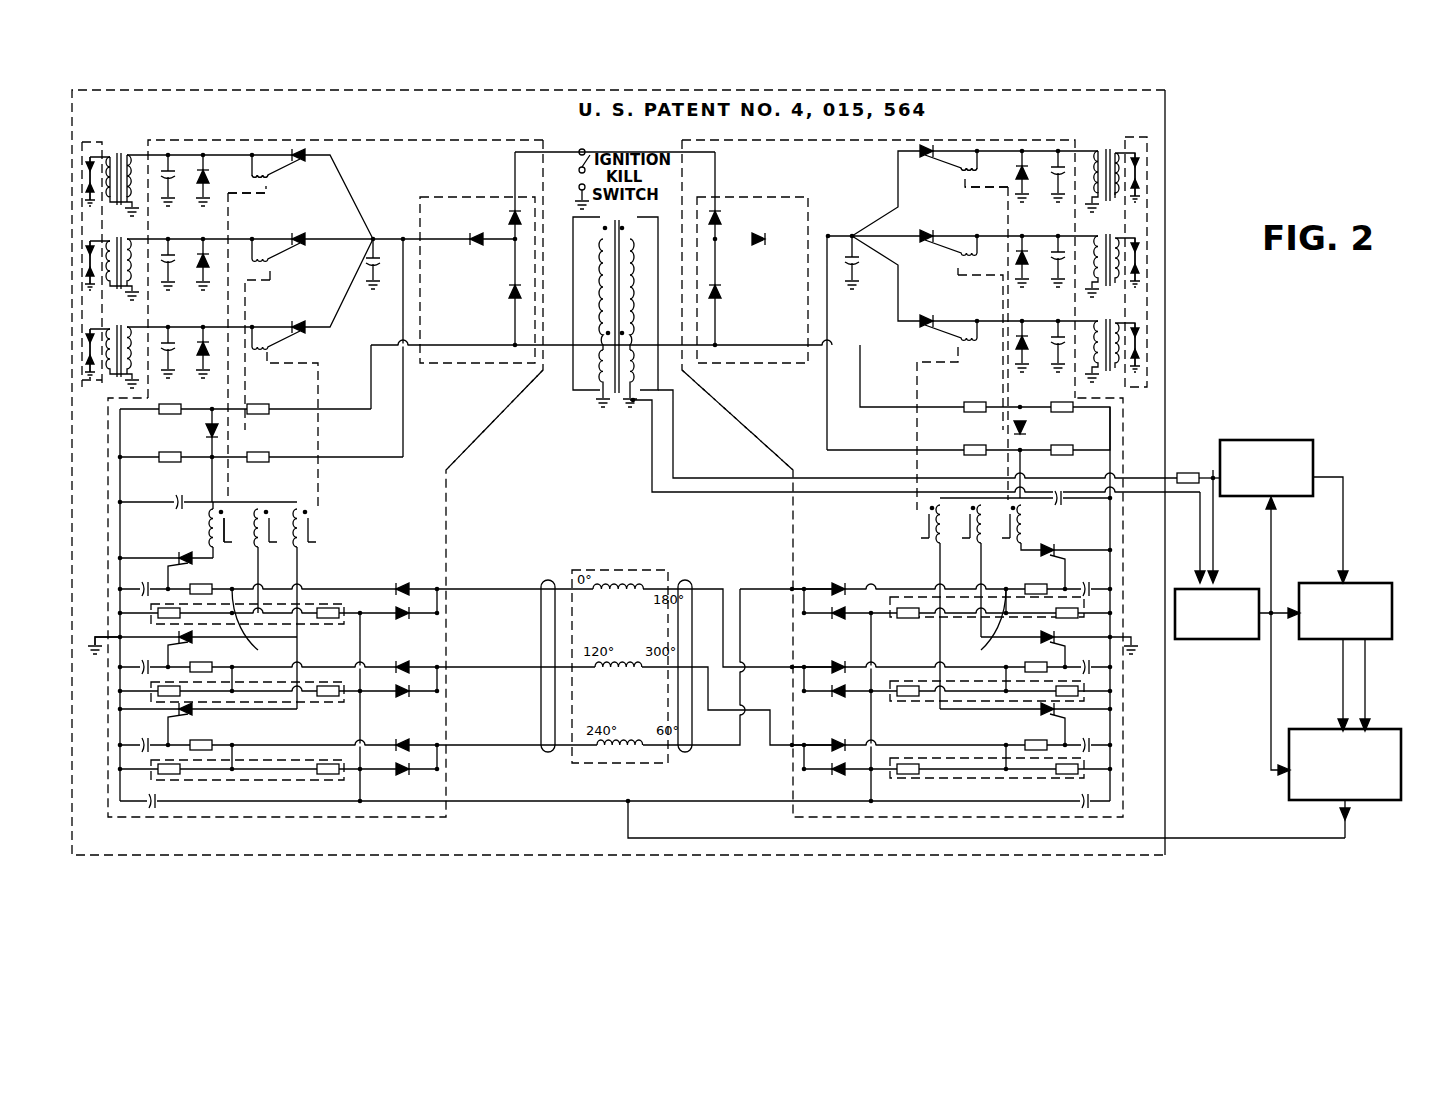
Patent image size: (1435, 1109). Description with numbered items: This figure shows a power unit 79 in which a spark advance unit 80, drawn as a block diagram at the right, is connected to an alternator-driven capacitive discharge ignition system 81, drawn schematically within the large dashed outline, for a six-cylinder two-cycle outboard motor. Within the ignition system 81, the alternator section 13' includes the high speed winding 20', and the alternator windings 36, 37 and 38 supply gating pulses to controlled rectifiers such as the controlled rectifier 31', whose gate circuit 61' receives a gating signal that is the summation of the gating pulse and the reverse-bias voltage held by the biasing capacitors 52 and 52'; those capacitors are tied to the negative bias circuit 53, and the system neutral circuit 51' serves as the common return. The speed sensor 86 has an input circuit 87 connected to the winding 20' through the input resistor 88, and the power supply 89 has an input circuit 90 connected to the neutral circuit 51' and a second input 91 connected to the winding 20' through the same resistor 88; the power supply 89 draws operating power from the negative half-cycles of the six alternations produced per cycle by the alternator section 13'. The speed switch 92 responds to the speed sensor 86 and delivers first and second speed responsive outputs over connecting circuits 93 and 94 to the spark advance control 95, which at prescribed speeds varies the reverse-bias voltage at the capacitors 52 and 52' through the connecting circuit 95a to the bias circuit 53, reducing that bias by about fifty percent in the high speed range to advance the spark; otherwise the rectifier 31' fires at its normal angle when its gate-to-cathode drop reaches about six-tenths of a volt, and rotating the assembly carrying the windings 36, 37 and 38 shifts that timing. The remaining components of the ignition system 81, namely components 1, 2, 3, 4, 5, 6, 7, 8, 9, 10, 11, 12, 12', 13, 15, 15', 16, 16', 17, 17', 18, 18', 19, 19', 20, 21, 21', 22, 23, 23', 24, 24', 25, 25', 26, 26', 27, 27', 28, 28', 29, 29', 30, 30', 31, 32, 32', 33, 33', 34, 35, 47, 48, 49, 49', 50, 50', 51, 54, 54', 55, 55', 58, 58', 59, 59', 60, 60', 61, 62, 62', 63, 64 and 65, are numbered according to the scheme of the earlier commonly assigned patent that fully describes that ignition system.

The pickup magnet 1 is at (86, 178).
The pickup magnet 2 is at (1145, 176).
The pickup magnet 3 is at (86, 266).
The pickup magnet 4 is at (1145, 264).
The pickup magnet 5 is at (86, 351).
The pickup magnet 6 is at (1145, 340).
The flywheel 7 is at (87, 397).
The charging coil assembly 8 is at (88, 142).
The charging coil assembly 9 is at (1143, 138).
The charging circuit 10 is at (398, 204).
The charging circuit 11 is at (845, 204).
The storage capacitor 12 is at (359, 270).
The storage capacitor 12' is at (871, 262).
The ignition transformer 13 is at (586, 331).
The alternator section 13' is at (679, 277).
The trigger circuit 15 is at (271, 343).
The trigger circuit 15' is at (959, 339).
The trigger circuit 16 is at (293, 264).
The trigger circuit 16' is at (945, 267).
The trigger circuit 17 is at (302, 340).
The trigger circuit 17' is at (927, 335).
The control circuit 18 is at (325, 478).
The control circuit 18' is at (902, 478).
The pulse transformers 19 is at (290, 528).
The pulse transformers 19' is at (928, 524).
The secondary winding 20 is at (577, 383).
The high speed winding 20' is at (666, 379).
The primary winding 21 is at (591, 288).
The primary winding 21' is at (646, 288).
The rectifier 22 is at (477, 368).
The capacitor 23 is at (208, 490).
The capacitor 23' is at (1025, 511).
The resistor network 24 is at (261, 453).
The resistor network 24' is at (968, 421).
The SCR 25 is at (285, 172).
The SCR 25' is at (941, 169).
The charging coil 26 is at (122, 151).
The charging coil 26' is at (1100, 149).
The trigger winding circuit 27 is at (247, 211).
The trigger winding circuit 27' is at (985, 206).
The gate winding 28 is at (242, 175).
The gate winding 28' is at (986, 175).
The trigger winding circuit 29 is at (263, 349).
The trigger winding circuit 29' is at (976, 349).
The trigger winding circuit 30 is at (314, 431).
The trigger winding circuit 30' is at (914, 428).
The SCR 31 is at (166, 561).
The controlled rectifier 31' is at (1065, 554).
The SCR 32 is at (201, 646).
The SCR 32' is at (1033, 644).
The SCR 33 is at (203, 717).
The SCR 33' is at (1024, 717).
The pulse transformer winding 34 is at (207, 528).
The pulse transformer core 35 is at (220, 542).
The alternator winding 36 is at (617, 596).
The alternator winding 37 is at (640, 673).
The alternator winding 38 is at (637, 752).
The connector 47 is at (548, 580).
The connector 48 is at (685, 580).
The diode 49 is at (396, 649).
The diode 49' is at (828, 647).
The resistor 50 is at (202, 578).
The resistor 50' is at (1022, 652).
The ground line 51 is at (79, 621).
The system neutral circuit 51' is at (915, 522).
The biasing capacitor 52 is at (178, 795).
The biasing capacitor 52' is at (1054, 795).
The negative bias circuit 53 is at (690, 801).
The diode 54 is at (845, 778).
The resistor 54' is at (259, 759).
The diode 55 is at (840, 666).
The diode 55' is at (421, 740).
The resistor network 58 is at (247, 692).
The resistor network 58' is at (987, 687).
The resistor 59 is at (153, 623).
The resistor 59' is at (1143, 618).
The resistor 60 is at (335, 652).
The resistor 60' is at (981, 691).
The conductor 61 is at (255, 625).
The gate circuit 61' is at (983, 623).
The capacitor 62 is at (147, 580).
The capacitor 62' is at (1092, 654).
The housing boundary 63 is at (452, 465).
The housing boundary 64 is at (771, 438).
The diode 65 is at (403, 619).
The power unit 79 is at (1238, 180).
The spark advance unit 80 is at (1258, 394).
The ignition system 81 is at (986, 90).
The speed sensor 86 is at (1314, 457).
The input circuit 87 is at (1219, 463).
The input resistor 88 is at (1188, 472).
The power supply 89 is at (1200, 640).
The input circuit 90 is at (1200, 562).
The second input 91 is at (1213, 562).
The speed switch 92 is at (1392, 640).
The connecting circuit 93 is at (1343, 702).
The connecting circuit 94 is at (1366, 702).
The spark advance control 95 is at (1378, 801).
The connecting circuit 95a is at (1345, 832).